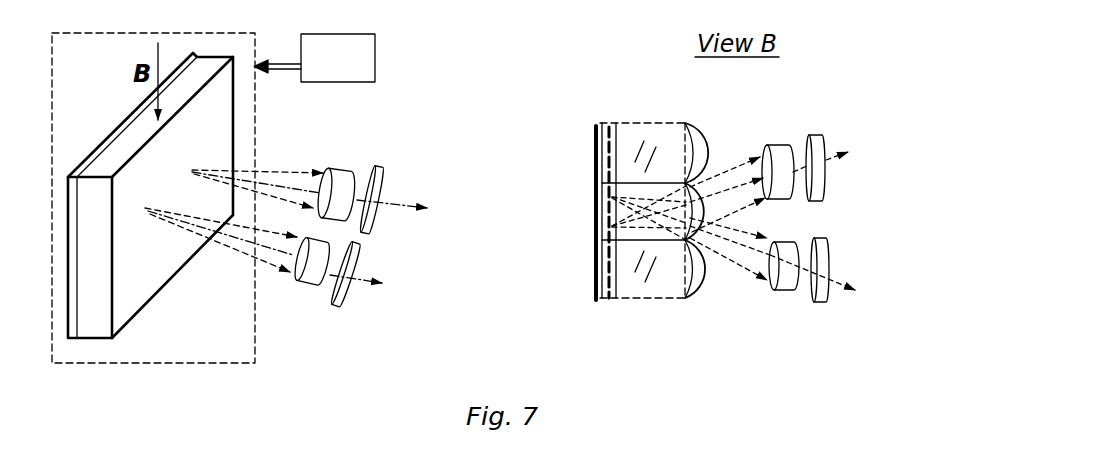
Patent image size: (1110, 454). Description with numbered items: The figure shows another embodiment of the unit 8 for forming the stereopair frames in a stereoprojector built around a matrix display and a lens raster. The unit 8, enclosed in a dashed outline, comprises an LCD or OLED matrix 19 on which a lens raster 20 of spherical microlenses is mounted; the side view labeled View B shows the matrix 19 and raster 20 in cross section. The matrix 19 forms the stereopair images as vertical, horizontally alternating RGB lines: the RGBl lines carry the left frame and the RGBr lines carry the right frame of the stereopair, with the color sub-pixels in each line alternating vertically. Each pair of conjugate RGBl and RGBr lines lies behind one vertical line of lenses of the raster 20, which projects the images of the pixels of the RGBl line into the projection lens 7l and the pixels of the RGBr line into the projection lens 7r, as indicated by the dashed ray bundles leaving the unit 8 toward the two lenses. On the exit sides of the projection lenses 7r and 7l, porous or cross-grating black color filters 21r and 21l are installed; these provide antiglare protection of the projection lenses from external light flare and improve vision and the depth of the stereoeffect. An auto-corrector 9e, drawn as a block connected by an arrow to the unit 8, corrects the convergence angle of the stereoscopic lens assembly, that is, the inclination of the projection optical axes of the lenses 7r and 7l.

The unit for forming of the stereopair frames 8 is at (182, 360).
The auto-corrector for correction of convergence angle 9e is at (314, 58).
The LCD or OLED matrix 19 is at (78, 278).
The lens raster 20 is at (703, 277).
The projection lens 7r is at (335, 167).
The projection lens 7l is at (305, 278).
The porous or cross-grating black color filter 21r is at (375, 172).
The porous or cross-grating black color filter 21l is at (345, 298).
The RGB lines for the left frame RGBl is at (608, 200).
The RGB lines for the right frame RGBr is at (608, 231).